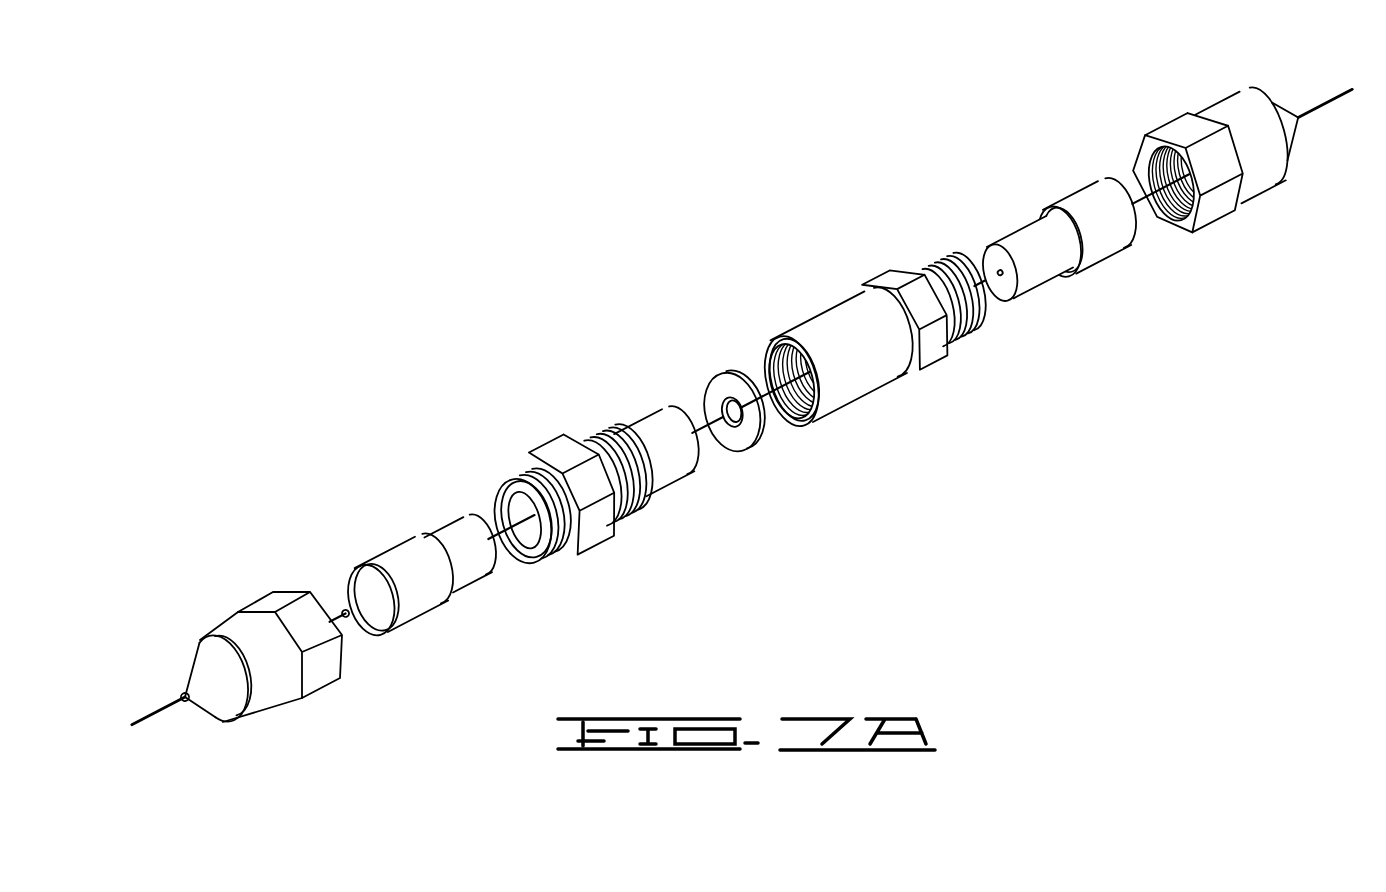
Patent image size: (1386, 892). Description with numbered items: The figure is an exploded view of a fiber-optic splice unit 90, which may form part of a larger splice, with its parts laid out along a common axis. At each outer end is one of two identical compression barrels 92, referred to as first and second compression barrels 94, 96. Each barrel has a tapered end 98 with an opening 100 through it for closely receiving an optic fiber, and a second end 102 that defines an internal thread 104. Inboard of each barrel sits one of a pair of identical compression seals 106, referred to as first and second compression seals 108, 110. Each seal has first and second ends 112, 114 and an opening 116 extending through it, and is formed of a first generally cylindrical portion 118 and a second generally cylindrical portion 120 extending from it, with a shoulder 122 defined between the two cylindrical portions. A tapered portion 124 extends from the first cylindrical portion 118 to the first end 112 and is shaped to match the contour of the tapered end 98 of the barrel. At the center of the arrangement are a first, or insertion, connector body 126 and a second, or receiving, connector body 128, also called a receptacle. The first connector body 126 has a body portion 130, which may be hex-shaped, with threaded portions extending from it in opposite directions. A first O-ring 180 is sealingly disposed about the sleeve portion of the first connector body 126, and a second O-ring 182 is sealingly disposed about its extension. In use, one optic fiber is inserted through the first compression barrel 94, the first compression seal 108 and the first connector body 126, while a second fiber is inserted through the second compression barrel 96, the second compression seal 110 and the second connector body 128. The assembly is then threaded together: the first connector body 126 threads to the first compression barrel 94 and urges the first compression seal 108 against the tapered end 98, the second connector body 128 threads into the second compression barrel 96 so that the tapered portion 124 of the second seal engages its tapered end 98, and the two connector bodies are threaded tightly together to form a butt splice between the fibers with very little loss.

The splice unit 90 is at (747, 401).
The compression barrels 92 is at (763, 408).
The first compression barrel 94 is at (272, 694).
The second compression barrel 96 is at (1223, 200).
The tapered end 98 is at (192, 670).
The opening 100 is at (190, 702).
The second end 102 is at (265, 600).
The internal thread 104 is at (1180, 208).
The compression seals 106 is at (728, 449).
The first compression seal 108 is at (411, 595).
The second compression seal 110 is at (1047, 283).
The first end 112 is at (1118, 197).
The second end 114 is at (478, 520).
The opening 116 is at (341, 609).
The first generally cylindrical portion 118 is at (432, 612).
The second generally cylindrical portion 120 is at (472, 575).
The shoulder 122 is at (1030, 223).
The tapered portion 124 is at (366, 632).
The first connector body 126 is at (596, 483).
The second connector body 128 is at (808, 318).
The body portion 130 is at (602, 510).
The first O-ring 180 is at (728, 423).
The second O-ring 182 is at (700, 397).